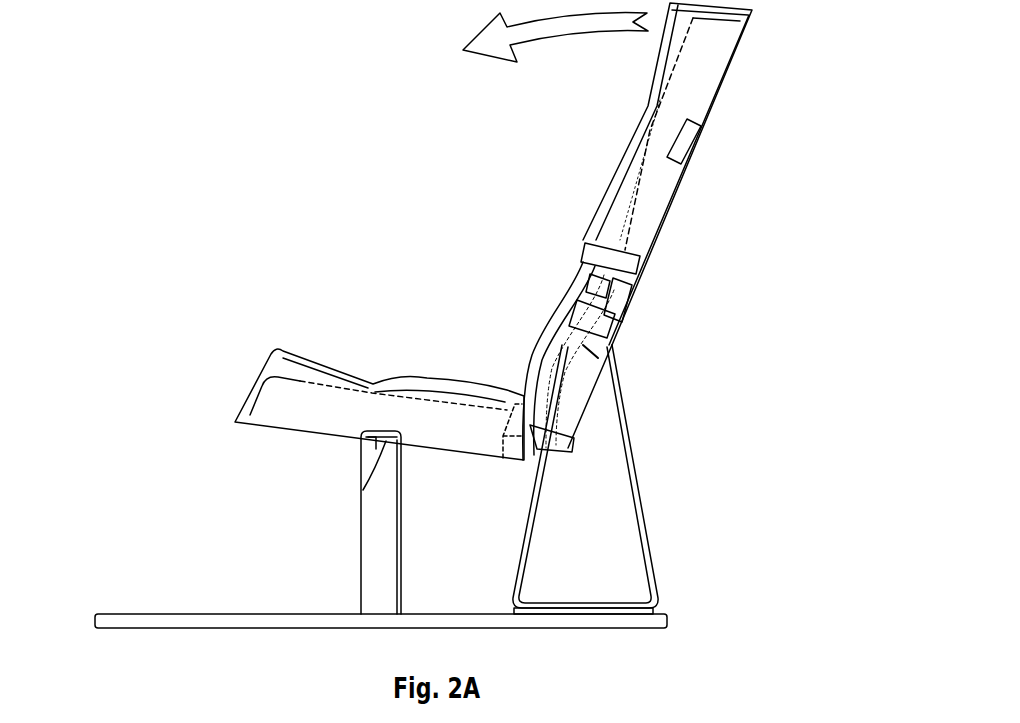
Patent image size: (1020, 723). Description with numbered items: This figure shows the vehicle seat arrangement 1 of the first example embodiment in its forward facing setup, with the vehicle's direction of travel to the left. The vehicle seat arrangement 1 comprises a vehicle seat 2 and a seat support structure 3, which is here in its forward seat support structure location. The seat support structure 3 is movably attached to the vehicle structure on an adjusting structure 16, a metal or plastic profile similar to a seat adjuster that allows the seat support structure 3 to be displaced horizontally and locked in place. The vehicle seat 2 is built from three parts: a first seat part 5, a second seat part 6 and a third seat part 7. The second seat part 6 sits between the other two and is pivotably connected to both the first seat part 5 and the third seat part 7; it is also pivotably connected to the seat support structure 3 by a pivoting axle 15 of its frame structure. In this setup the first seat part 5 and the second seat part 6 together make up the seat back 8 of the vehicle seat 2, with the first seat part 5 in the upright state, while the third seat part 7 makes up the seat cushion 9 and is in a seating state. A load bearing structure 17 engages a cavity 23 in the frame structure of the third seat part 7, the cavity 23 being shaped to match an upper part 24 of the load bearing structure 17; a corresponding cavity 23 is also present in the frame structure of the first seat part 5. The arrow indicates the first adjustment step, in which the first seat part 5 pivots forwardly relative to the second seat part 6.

The vehicle seat arrangement 1 is at (327, 80).
The vehicle seat 2 is at (327, 172).
The seat support structure 3 is at (643, 513).
The first seat part 5 is at (652, 72).
The second seat part 6 is at (543, 318).
The third seat part 7 is at (336, 366).
The seat back 8 is at (708, 218).
The seat cushion 9 is at (172, 372).
The pivoting axle 15 is at (616, 374).
The adjusting structure 16 is at (130, 613).
The load bearing structure 17 is at (383, 577).
The cavity 23 is at (696, 141).
The upper part of the load bearing structure 24 is at (363, 490).